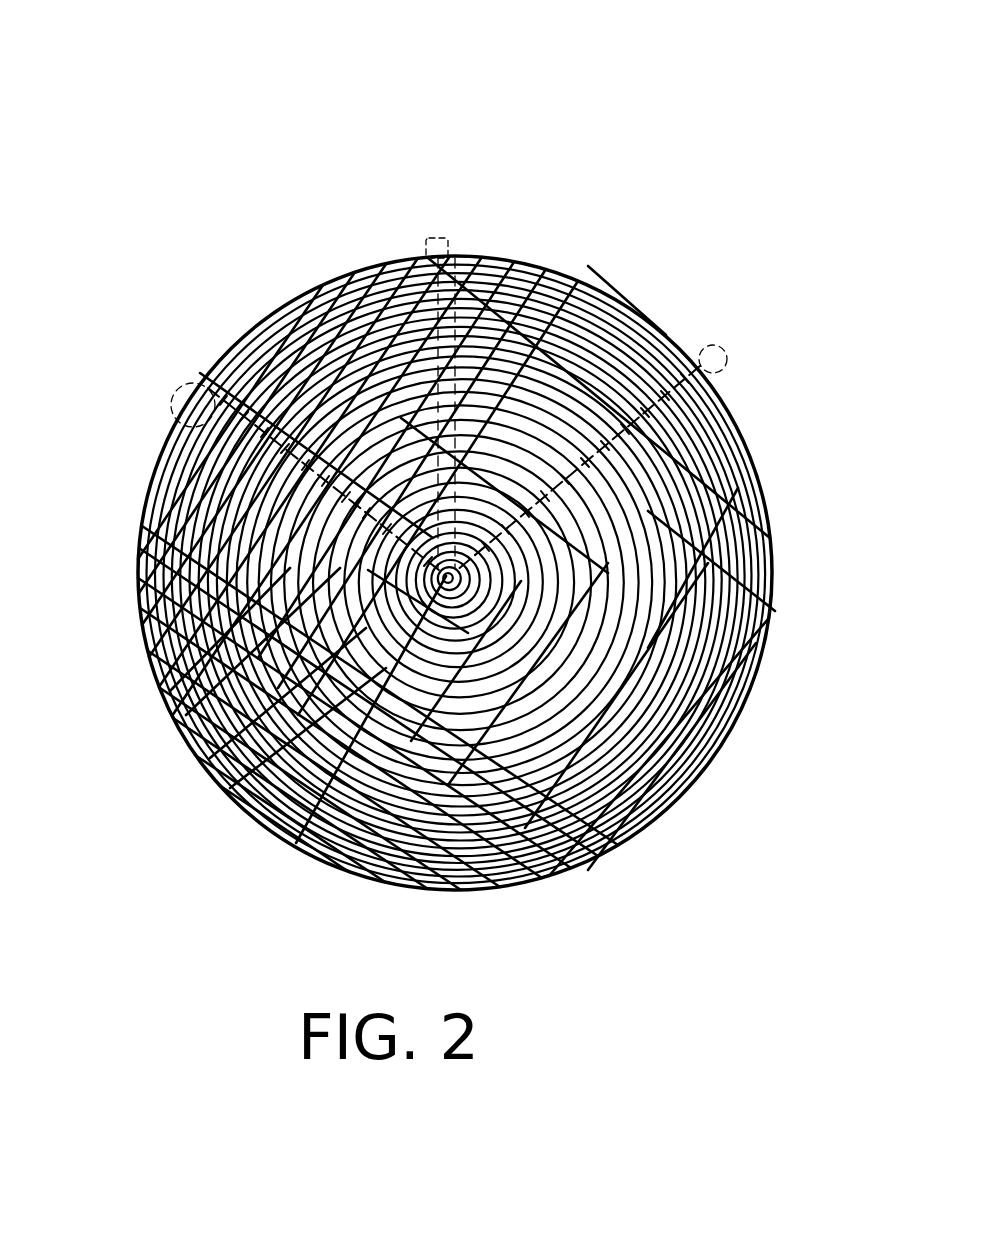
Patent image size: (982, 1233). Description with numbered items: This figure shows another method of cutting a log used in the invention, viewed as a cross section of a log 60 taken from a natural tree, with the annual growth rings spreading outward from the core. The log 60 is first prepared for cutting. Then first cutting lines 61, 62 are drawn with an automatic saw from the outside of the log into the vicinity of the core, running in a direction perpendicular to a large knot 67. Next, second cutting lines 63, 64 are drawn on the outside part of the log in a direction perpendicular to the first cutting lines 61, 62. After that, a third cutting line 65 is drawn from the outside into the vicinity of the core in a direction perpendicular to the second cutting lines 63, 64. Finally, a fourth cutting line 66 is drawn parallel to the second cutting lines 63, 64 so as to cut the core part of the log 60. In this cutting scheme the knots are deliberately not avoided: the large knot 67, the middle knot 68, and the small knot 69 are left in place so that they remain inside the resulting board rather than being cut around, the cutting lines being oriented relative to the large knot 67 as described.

The log 60 is at (170, 96).
The first cutting line 61 is at (581, 256).
The first cutting line 62 is at (373, 250).
The second cutting line 63 is at (770, 604).
The second cutting line 64 is at (589, 863).
The third cutting line 65 is at (742, 552).
The fourth cutting line 66 is at (287, 840).
The large knot 67 is at (166, 400).
The middle knot 68 is at (432, 240).
The small knot 69 is at (714, 348).